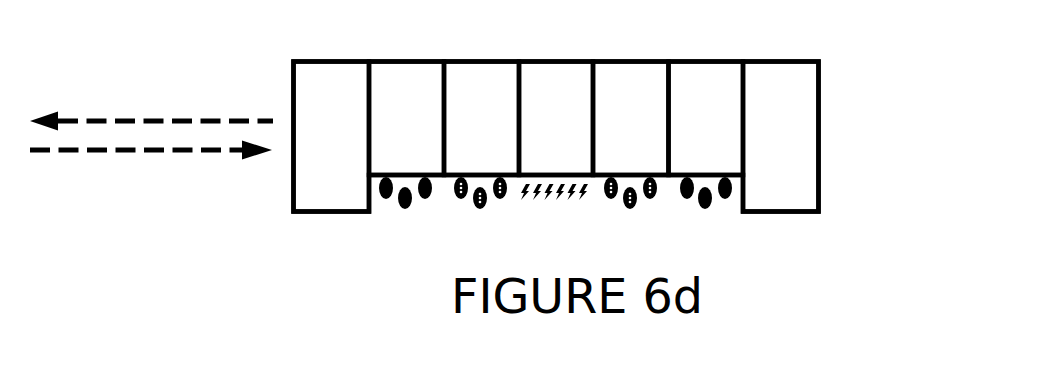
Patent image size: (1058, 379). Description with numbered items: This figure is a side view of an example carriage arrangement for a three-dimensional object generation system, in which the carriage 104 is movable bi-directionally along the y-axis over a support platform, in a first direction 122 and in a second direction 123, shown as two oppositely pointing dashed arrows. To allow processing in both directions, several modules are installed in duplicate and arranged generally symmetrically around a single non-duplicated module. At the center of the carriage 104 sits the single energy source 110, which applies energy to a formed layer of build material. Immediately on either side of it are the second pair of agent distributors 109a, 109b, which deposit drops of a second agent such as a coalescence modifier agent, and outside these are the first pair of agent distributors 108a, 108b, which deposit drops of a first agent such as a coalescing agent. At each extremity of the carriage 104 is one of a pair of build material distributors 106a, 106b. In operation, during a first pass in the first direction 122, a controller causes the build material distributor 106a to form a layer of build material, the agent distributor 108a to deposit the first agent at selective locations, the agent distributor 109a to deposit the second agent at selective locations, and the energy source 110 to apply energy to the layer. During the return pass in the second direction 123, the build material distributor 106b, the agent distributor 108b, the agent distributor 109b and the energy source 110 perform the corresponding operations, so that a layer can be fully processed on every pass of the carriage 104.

The carriage 104 is at (857, 136).
The build material distributor 106a is at (305, 150).
The build material distributor 106b is at (755, 150).
The agent distributor 108a is at (382, 132).
The agent distributor 108b is at (682, 132).
The agent distributor 109a is at (457, 132).
The agent distributor 109b is at (607, 132).
The energy source 110 is at (537, 132).
The first direction 122 is at (217, 121).
The second direction 123 is at (120, 150).